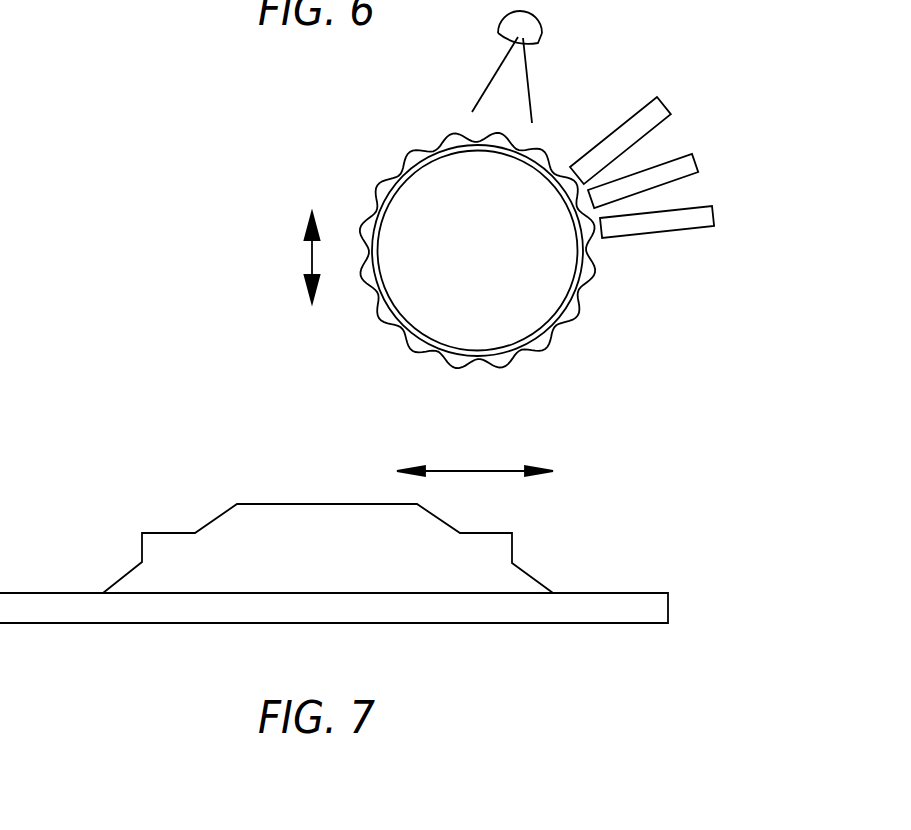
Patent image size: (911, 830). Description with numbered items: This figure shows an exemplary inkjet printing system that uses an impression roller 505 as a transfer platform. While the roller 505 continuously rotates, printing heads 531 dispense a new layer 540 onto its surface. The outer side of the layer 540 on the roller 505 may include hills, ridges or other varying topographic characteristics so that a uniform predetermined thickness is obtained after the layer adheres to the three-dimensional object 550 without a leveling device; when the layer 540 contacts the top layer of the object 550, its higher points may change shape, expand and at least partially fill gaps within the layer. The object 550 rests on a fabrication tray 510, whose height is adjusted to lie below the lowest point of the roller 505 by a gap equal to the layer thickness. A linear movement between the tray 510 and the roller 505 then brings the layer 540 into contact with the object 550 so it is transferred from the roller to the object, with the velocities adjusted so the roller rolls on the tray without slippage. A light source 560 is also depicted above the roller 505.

The impression roller 505 is at (566, 312).
The new layer 540 is at (505, 368).
The printing heads 531 is at (713, 213).
The light source 560 is at (532, 22).
The 3D object 550 is at (178, 547).
The fabrication tray 510 is at (287, 624).